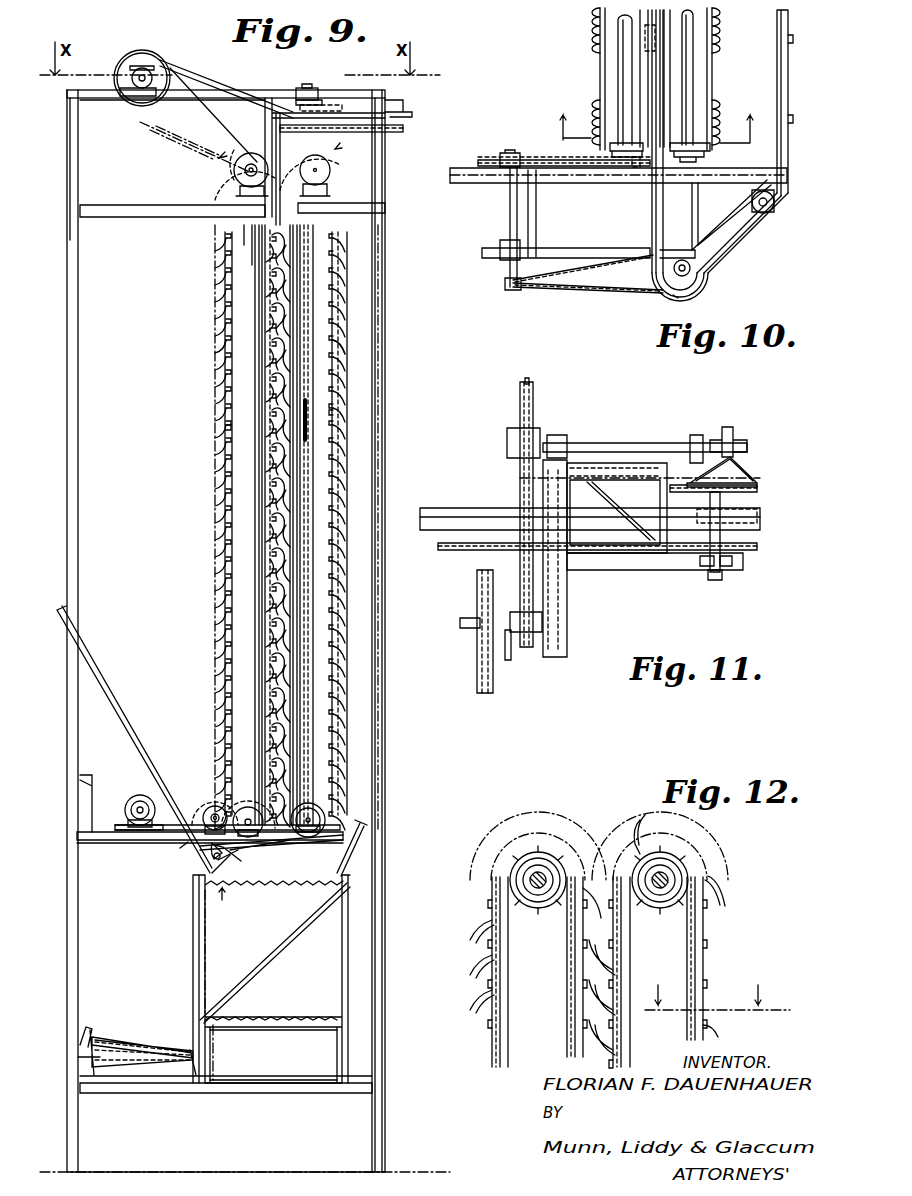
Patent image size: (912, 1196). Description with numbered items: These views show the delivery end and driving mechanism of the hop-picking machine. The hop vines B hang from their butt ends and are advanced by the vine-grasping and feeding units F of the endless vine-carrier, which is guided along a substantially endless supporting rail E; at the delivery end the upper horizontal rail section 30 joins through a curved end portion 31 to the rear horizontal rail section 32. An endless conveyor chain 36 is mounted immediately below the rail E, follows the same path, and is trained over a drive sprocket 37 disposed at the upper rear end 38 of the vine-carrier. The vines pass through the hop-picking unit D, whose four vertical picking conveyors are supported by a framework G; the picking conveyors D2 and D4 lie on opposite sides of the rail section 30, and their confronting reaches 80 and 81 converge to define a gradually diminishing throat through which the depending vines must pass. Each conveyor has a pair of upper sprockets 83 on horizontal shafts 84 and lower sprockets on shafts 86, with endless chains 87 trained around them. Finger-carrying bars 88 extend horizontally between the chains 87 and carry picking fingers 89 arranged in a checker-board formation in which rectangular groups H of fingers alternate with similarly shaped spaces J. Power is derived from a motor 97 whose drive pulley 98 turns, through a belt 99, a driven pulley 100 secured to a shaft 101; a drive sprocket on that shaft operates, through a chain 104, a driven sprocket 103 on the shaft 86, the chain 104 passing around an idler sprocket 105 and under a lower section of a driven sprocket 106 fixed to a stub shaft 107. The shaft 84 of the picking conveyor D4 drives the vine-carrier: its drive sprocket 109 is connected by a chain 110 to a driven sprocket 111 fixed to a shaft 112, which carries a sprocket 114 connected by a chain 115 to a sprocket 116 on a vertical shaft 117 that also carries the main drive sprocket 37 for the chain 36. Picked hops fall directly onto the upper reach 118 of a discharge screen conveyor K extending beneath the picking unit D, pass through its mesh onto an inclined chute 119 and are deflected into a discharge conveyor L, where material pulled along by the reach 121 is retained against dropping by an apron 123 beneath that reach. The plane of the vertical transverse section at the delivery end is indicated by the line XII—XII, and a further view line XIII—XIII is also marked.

In FIG. 10, the upper horizontal rail section 30 is at (633, 219).
In FIG. 11, the upper horizontal rail section 30 is at (478, 504).
In FIG. 10, the curved end portion 31 is at (763, 240).
In FIG. 10, the rear horizontal rail section 32 is at (782, 88).
In FIG. 9, the endless conveyor chain 36 is at (403, 128).
In FIG. 11, the endless conveyor chain 36 is at (458, 550).
In FIG. 11, the drive sprocket 37 is at (751, 559).
In FIG. 10, the upper rear end 38 is at (646, 314).
In FIG. 11, the upper rear end 38 is at (752, 586).
In FIG. 9, the confronting reach 80 is at (301, 546).
In FIG. 12, the confronting reach 80 is at (626, 1025).
In FIG. 9, the confronting reach 81 is at (255, 530).
In FIG. 12, the confronting reach 81 is at (570, 1025).
In FIG. 9, the upper sprockets 83 is at (246, 174).
In FIG. 10, the upper sprockets 83 is at (633, 168).
In FIG. 12, the upper sprockets 83 is at (549, 920).
In FIG. 9, the horizontal shafts 84 is at (232, 224).
In FIG. 10, the horizontal shafts 84 is at (621, 82).
In FIG. 11, the horizontal shafts 84 is at (538, 625).
In FIG. 9, the shafts 86 is at (333, 824).
In FIG. 9, the endless chains 87 is at (223, 698).
In FIG. 11, the endless chains 87 is at (488, 681).
In FIG. 9, the finger-carrying bars 88 is at (224, 426).
In FIG. 10, the finger-carrying bars 88 is at (705, 86).
In FIG. 12, the finger-carrying bars 88 is at (676, 840).
In FIG. 9, the picking fingers 89 is at (204, 339).
In FIG. 10, the picking fingers 89 is at (570, 19).
In FIG. 12, the picking fingers 89 is at (713, 895).
In FIG. 9, the motor 97 is at (136, 792).
In FIG. 9, the drive pulley 98 is at (136, 806).
In FIG. 9, the belt 99 is at (144, 843).
In FIG. 9, the driven pulley 100 is at (210, 836).
In FIG. 9, the shaft 101 is at (202, 872).
In FIG. 9, the driven sprocket 103 is at (328, 800).
In FIG. 9, the chain 104 is at (271, 856).
In FIG. 9, the idler sprocket 105 is at (220, 856).
In FIG. 9, the driven sprocket 106 is at (245, 770).
In FIG. 9, the stub shaft 107 is at (214, 802).
In FIG. 9, the drive sprocket 109 is at (250, 168).
In FIG. 10, the drive sprocket 109 is at (614, 170).
In FIG. 11, the drive sprocket 109 is at (531, 613).
In FIG. 9, the chain 110 is at (147, 134).
In FIG. 10, the chain 110 is at (555, 157).
In FIG. 11, the chain 110 is at (518, 488).
In FIG. 9, the driven sprocket 111 is at (166, 52).
In FIG. 10, the driven sprocket 111 is at (500, 148).
In FIG. 11, the driven sprocket 111 is at (518, 402).
In FIG. 9, the shaft 112 is at (150, 74).
In FIG. 10, the shaft 112 is at (508, 212).
In FIG. 11, the shaft 112 is at (630, 432).
In FIG. 9, the sprocket 114 is at (134, 58).
In FIG. 10, the sprocket 114 is at (513, 290).
In FIG. 11, the sprocket 114 is at (732, 448).
In FIG. 9, the chain 115 is at (210, 68).
In FIG. 10, the chain 115 is at (595, 296).
In FIG. 11, the chain 115 is at (728, 472).
In FIG. 9, the sprocket 116 is at (346, 90).
In FIG. 10, the sprocket 116 is at (692, 266).
In FIG. 11, the sprocket 116 is at (730, 490).
In FIG. 9, the vertical shaft 117 is at (302, 78).
In FIG. 10, the vertical shaft 117 is at (676, 264).
In FIG. 11, the vertical shaft 117 is at (720, 586).
In FIG. 9, the upper reach 118 is at (296, 903).
In FIG. 9, the inclined chute 119 is at (272, 952).
In FIG. 9, the reach 121 is at (282, 1027).
In FIG. 9, the apron 123 is at (320, 1028).
In FIG. 9, the hop vines B is at (278, 466).
In FIG. 9, the hop-picking unit D is at (197, 377).
In FIG. 10, the hop-picking unit D is at (566, 41).
In FIG. 9, the picking conveyor D2 is at (341, 642).
In FIG. 10, the picking conveyor D2 is at (715, 66).
In FIG. 12, the picking conveyor D2 is at (725, 1040).
In FIG. 9, the picking conveyor D4 is at (218, 592).
In FIG. 10, the picking conveyor D4 is at (602, 70).
In FIG. 12, the picking conveyor D4 is at (478, 1060).
In FIG. 9, the supporting rail E is at (410, 106).
In FIG. 10, the supporting rail E is at (738, 276).
In FIG. 11, the supporting rail E is at (765, 523).
In FIG. 9, the vine-grasping and feeding units F is at (256, 123).
In FIG. 9, the framework G is at (379, 381).
In FIG. 9, the rectangular groups of picking fingers H is at (206, 656).
In FIG. 12, the rectangular groups of picking fingers H is at (474, 1012).
In FIG. 9, the spaces J is at (204, 312).
In FIG. 12, the spaces J is at (734, 988).
In FIG. 9, the discharge screen conveyor K is at (220, 935).
In FIG. 9, the discharge conveyor L is at (155, 1022).
In FIG. 10, the line XII— XII is at (645, 119).
In FIG. 12, the section line XIII is at (715, 988).